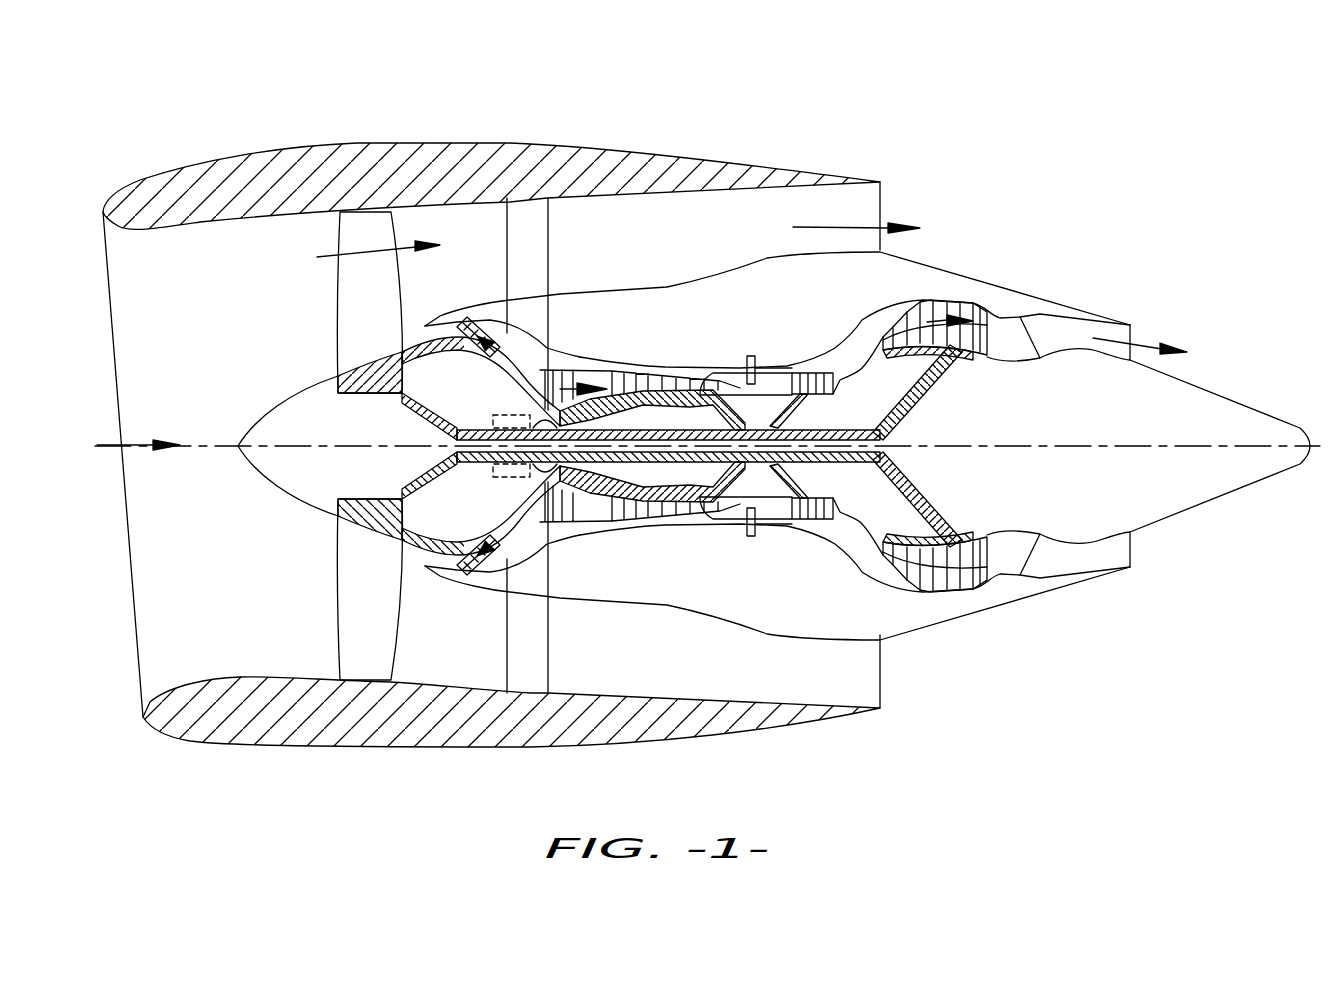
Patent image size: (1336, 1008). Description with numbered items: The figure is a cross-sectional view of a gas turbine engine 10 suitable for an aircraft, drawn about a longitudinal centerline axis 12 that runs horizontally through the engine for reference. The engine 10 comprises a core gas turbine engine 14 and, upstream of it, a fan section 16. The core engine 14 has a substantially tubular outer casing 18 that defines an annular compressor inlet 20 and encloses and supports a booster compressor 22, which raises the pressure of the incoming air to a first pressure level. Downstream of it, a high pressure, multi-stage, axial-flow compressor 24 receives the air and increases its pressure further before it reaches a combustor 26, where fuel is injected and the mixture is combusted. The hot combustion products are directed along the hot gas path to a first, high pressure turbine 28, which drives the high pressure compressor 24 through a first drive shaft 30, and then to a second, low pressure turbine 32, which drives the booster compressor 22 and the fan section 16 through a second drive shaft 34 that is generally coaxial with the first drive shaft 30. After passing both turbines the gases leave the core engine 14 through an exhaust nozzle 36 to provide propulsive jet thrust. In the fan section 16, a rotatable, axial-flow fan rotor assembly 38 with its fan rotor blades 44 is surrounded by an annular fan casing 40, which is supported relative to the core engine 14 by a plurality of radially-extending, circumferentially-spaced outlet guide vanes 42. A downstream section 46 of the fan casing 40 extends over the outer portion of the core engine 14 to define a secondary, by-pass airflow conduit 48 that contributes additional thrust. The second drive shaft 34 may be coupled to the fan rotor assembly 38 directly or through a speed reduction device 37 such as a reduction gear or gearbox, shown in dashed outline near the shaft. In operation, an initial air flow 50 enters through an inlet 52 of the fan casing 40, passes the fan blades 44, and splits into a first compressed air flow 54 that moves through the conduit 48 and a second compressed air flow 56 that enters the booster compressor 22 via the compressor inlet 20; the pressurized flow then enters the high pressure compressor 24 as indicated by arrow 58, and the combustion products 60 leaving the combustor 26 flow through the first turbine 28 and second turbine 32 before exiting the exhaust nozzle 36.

The gas turbine engine 10 is at (1056, 215).
The centerline axis 12 is at (1042, 440).
The core gas turbine engine 14 is at (709, 324).
The fan section 16 is at (418, 128).
The outer casing 18 is at (733, 632).
The compressor inlet 20 is at (434, 561).
The booster compressor 22 is at (500, 540).
The high pressure compressor 24 is at (582, 513).
The combustor 26 is at (768, 522).
The first turbine 28 is at (846, 522).
The first drive shaft 30 is at (812, 398).
The second turbine 32 is at (977, 592).
The second drive shaft 34 is at (503, 416).
The exhaust nozzle 36 is at (1127, 332).
The speed reduction device 37 is at (508, 480).
The fan rotor assembly 38 is at (395, 405).
The fan casing 40 is at (400, 748).
The outlet guide vanes 42 is at (548, 247).
The fan rotor blades 44 is at (336, 625).
The downstream section 46 is at (768, 163).
The by-pass airflow conduit 48 is at (675, 240).
The initial air flow 50 is at (133, 445).
The inlet 52 is at (138, 673).
The first compressed air flow 54 is at (345, 254).
The second compressed air flow 56 is at (424, 326).
The air flow into high pressure compressor 58 is at (563, 373).
The combustion products 60 is at (813, 368).